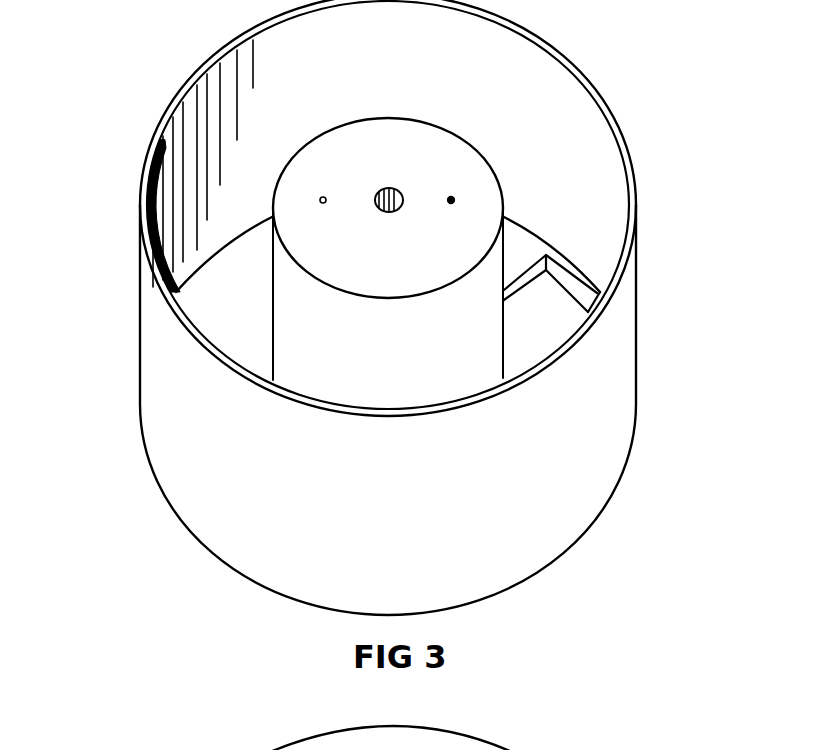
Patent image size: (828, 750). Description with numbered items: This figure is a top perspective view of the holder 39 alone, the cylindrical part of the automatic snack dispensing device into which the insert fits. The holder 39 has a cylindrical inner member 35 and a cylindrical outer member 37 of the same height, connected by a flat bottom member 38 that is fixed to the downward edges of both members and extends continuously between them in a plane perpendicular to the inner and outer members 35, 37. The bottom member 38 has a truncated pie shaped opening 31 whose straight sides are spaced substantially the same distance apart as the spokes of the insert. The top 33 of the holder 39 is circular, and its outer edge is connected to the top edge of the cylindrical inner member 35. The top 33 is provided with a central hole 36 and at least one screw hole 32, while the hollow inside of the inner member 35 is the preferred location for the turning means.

The truncated pie shaped opening 31 is at (530, 323).
The screw hole 32 is at (315, 197).
The top 33 is at (445, 162).
The cylindrical inner member 35 is at (322, 327).
The central hole 36 is at (455, 199).
The cylindrical outer member 37 is at (557, 447).
The flat bottom member 38 is at (522, 245).
The holder 39 is at (133, 415).